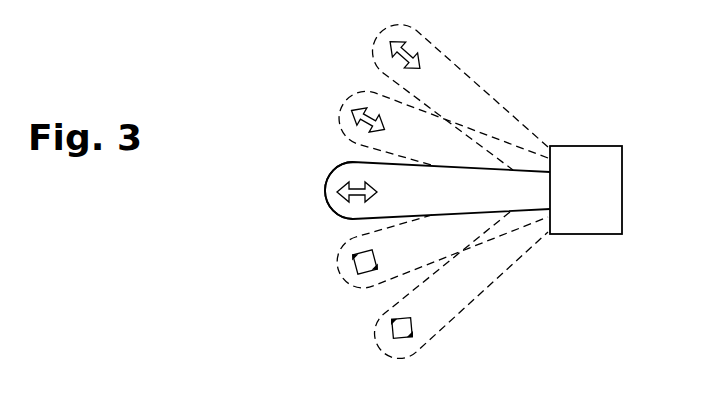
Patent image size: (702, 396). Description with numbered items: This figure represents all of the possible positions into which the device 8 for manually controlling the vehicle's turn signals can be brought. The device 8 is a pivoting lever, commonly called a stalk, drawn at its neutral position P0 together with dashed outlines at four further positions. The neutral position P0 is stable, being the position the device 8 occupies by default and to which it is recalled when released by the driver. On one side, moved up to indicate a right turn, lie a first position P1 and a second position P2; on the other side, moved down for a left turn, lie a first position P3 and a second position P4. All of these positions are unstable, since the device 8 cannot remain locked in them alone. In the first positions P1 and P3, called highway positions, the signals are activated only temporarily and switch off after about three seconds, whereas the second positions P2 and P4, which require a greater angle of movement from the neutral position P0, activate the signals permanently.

The neutral position P0 is at (328, 182).
The first position P1 is at (344, 101).
The second position P2 is at (384, 33).
The first position P3 is at (339, 261).
The second position P4 is at (376, 321).
The device 8 is at (334, 204).